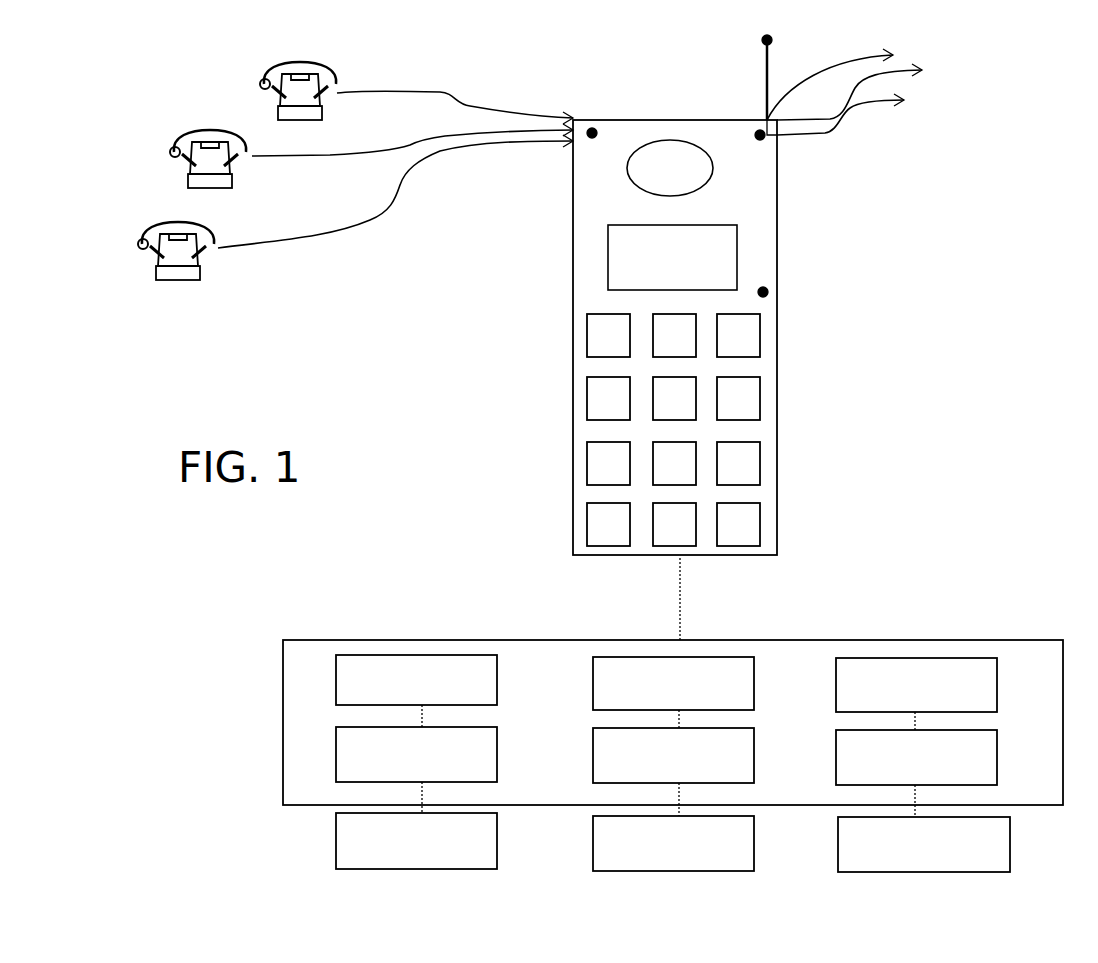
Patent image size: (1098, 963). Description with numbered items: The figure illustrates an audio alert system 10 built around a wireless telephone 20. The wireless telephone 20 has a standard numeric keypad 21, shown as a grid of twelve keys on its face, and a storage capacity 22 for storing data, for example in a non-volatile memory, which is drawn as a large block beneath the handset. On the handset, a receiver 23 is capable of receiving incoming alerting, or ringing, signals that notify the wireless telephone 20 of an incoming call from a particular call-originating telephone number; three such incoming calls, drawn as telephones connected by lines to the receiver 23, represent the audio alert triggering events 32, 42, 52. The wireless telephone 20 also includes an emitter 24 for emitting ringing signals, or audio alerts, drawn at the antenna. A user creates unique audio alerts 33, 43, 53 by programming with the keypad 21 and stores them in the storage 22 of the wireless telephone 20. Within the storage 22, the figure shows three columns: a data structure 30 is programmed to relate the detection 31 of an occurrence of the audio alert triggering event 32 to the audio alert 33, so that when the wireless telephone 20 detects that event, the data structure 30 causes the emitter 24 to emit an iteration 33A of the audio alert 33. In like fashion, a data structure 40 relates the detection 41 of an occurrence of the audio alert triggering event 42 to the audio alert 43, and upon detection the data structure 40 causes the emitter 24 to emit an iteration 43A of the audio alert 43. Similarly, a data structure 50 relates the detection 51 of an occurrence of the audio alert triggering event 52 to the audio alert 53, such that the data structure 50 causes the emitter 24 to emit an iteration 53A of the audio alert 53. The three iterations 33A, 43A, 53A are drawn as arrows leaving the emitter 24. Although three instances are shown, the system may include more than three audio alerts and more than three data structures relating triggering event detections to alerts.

The audio alert system 10 is at (907, 482).
The wireless telephone 20 is at (573, 250).
The standard numeric keypad 21 is at (777, 394).
The storage capacity 22 is at (283, 723).
The receiver 23 is at (580, 140).
The emitter 24 is at (768, 140).
The data structure 30 is at (497, 740).
The detection 31 is at (497, 828).
The audio alert triggering event 32 is at (363, 92).
The audio alert 33 is at (497, 665).
The iteration of audio alert 33A is at (847, 83).
The data structure 40 is at (754, 742).
The detection 41 is at (754, 830).
The audio alert triggering event 42 is at (262, 157).
The audio alert 43 is at (754, 668).
The iteration of audio alert 43A is at (868, 91).
The data structure 50 is at (997, 744).
The detection 51 is at (1000, 833).
The audio alert triggering event 52 is at (282, 248).
The audio alert 53 is at (997, 670).
The iteration of audio alert 53A is at (859, 113).